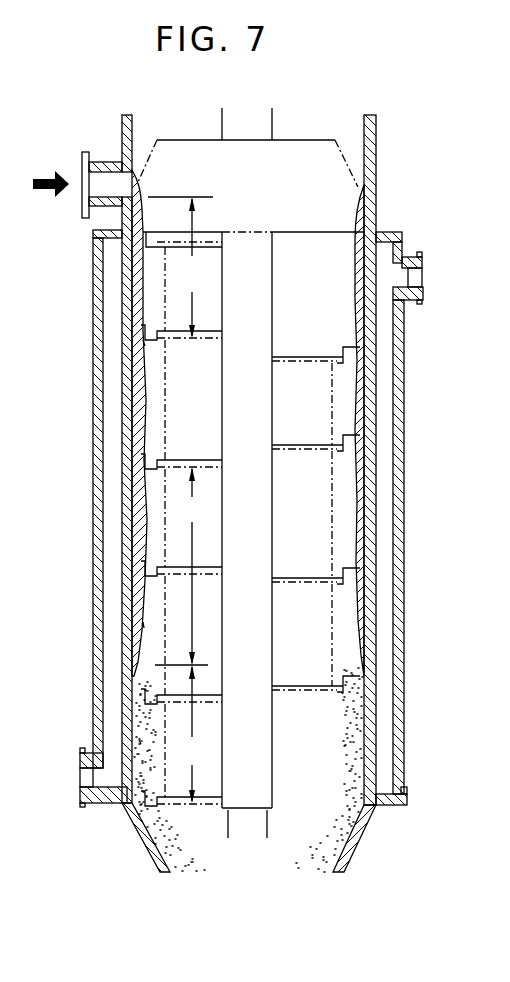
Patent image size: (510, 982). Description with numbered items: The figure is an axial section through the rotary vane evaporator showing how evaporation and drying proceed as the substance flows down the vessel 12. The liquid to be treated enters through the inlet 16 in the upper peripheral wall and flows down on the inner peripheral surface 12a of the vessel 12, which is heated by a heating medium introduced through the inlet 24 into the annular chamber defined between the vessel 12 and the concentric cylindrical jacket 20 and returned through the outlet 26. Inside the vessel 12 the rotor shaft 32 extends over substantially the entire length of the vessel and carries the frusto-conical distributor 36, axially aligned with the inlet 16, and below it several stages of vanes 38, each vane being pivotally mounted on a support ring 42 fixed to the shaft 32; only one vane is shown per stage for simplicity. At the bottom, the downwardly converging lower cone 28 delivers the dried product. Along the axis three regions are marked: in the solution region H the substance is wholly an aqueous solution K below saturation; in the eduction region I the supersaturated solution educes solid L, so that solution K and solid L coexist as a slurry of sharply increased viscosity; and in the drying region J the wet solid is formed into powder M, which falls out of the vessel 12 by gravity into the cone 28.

The vessel 12 is at (378, 142).
The inner peripheral surface 12a is at (360, 246).
The liquid inlet 16 is at (104, 162).
The cylindrical jacket 20 is at (93, 386).
The heating medium inlet 24 is at (414, 263).
The heating medium outlet 26 is at (90, 803).
The lower cone 28 is at (363, 840).
The rotor shaft 32 is at (273, 320).
The frusto-conical distributor 36 is at (197, 138).
The vane 38 is at (330, 366).
The ring 42 is at (304, 690).
The solution region H is at (180, 267).
The eduction region I is at (192, 566).
The drying region J is at (181, 734).
The solution K is at (143, 346).
The solid L is at (142, 626).
The powder M is at (141, 742).